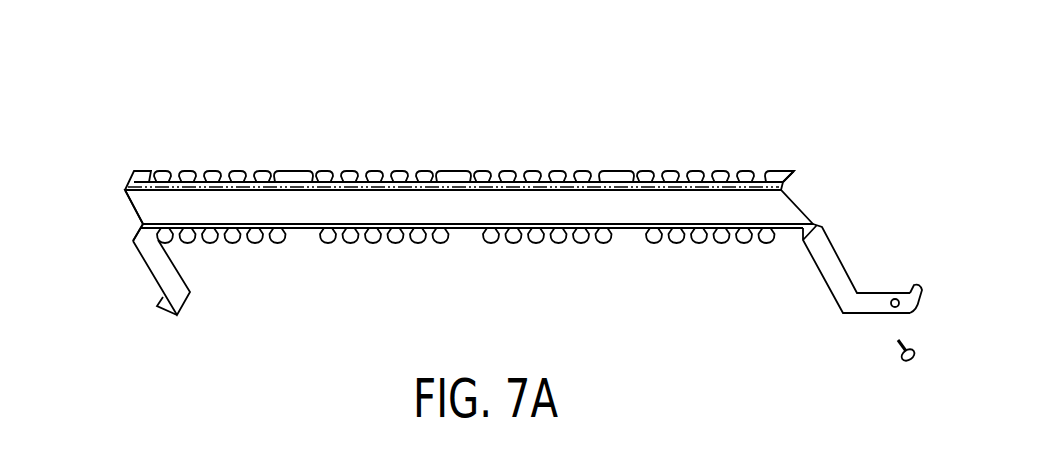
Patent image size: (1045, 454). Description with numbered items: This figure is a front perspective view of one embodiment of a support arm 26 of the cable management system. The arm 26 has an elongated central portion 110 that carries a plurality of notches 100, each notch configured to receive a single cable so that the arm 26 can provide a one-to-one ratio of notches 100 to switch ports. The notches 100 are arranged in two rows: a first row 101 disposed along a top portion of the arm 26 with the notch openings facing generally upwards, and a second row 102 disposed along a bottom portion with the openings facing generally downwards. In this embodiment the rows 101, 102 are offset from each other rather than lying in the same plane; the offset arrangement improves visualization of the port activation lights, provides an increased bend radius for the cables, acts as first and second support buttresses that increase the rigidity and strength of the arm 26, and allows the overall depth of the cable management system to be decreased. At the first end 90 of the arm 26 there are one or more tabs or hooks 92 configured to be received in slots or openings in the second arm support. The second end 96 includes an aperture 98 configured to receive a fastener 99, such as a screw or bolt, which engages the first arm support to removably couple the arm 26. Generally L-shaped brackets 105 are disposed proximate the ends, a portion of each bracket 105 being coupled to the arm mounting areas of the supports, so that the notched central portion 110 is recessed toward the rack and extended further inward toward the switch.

The arm 26 is at (70, 66).
The elongated central portion 110 is at (803, 97).
The notches 100 is at (256, 158).
The first row 101 is at (796, 175).
The second row 102 is at (140, 233).
The tabs or hooks 92 is at (160, 303).
The bracket 105 is at (192, 279).
The second end 96 is at (838, 340).
The aperture 98 is at (893, 298).
The fastener 99 is at (908, 363).
The first end 90 is at (148, 340).